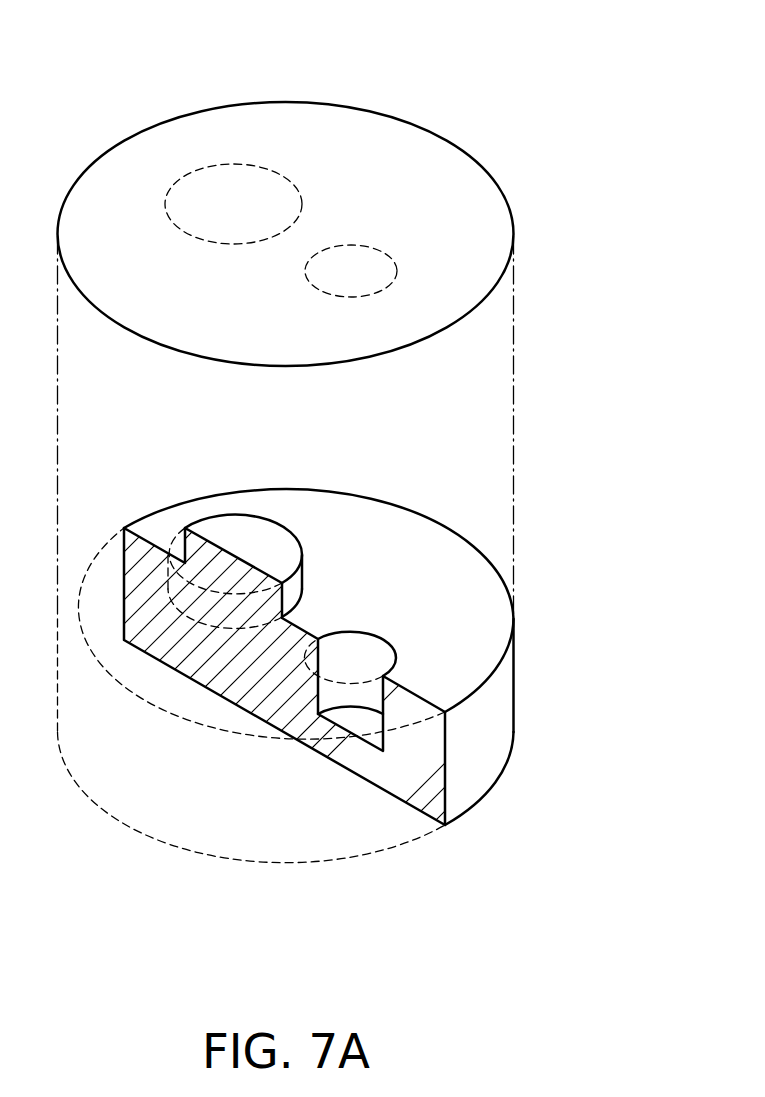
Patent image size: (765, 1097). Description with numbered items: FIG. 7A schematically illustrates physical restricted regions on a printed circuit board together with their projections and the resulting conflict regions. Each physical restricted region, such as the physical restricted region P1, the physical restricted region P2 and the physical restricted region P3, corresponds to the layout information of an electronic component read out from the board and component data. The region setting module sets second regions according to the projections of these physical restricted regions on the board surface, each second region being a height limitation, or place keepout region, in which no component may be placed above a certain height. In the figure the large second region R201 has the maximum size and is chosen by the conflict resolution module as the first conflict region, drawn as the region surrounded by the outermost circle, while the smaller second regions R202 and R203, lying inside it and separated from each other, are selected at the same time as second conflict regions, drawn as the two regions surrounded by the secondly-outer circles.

The second region R201 is at (432, 130).
The second region R202 is at (372, 243).
The second region R203 is at (293, 180).
The physical restricted region P1 is at (448, 713).
The physical restricted region P2 is at (342, 728).
The physical restricted region P3 is at (232, 550).